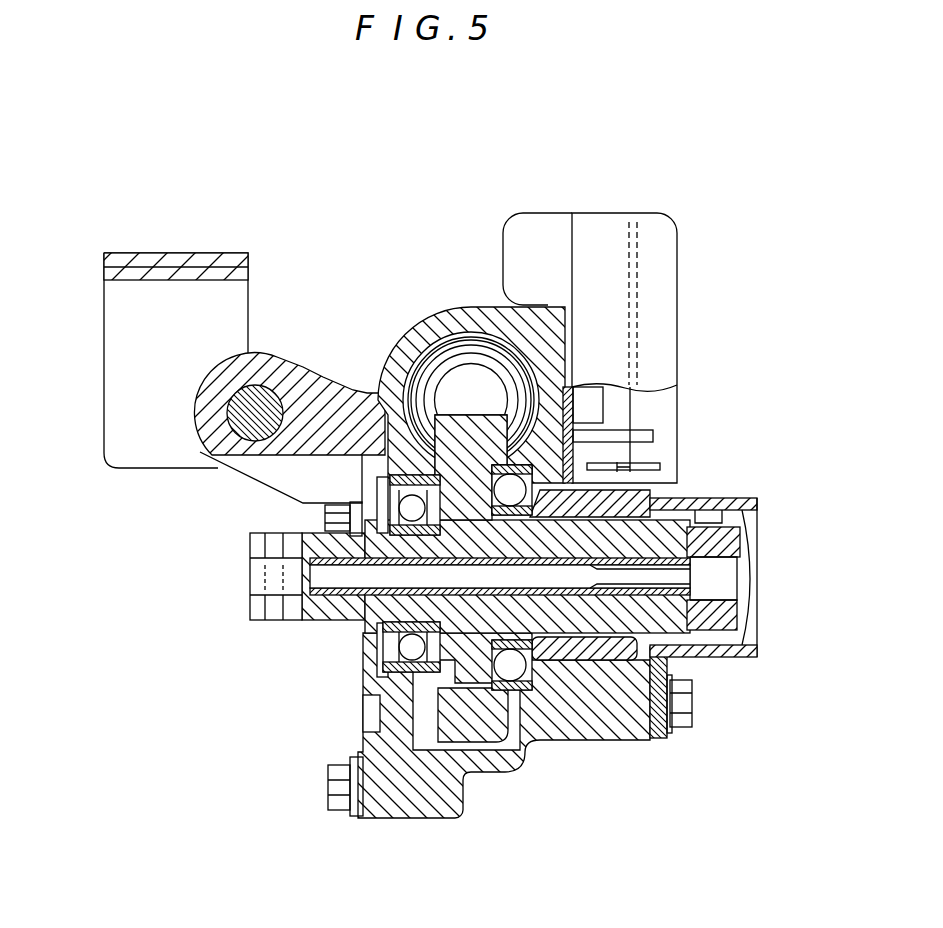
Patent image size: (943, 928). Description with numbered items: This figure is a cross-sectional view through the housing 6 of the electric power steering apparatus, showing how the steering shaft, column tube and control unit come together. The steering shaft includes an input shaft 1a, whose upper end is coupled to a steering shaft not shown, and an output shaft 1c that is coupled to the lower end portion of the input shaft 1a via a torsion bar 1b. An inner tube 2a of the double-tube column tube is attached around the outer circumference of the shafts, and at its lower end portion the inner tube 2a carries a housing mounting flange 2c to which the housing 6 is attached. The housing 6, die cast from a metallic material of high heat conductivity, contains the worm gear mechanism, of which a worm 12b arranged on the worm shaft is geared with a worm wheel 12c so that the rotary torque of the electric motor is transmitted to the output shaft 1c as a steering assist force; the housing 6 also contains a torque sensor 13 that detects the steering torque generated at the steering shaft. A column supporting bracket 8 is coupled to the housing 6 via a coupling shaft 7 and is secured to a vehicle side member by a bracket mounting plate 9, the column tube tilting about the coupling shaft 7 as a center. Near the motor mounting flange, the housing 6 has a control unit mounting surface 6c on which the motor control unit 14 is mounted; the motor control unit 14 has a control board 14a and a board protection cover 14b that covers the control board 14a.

The input shaft 1a is at (737, 540).
The torsion bar 1b is at (352, 580).
The output shaft 1c is at (337, 550).
The inner tube 2a is at (732, 498).
The housing mounting flange 2c is at (660, 667).
The housing 6 is at (585, 728).
The control unit mounting surface 6c is at (567, 355).
The coupling shaft 7 is at (253, 422).
The column supporting bracket 8 is at (128, 353).
The bracket mounting plate 9 is at (198, 253).
The worm 12b is at (432, 357).
The worm wheel 12c is at (527, 773).
The torque sensor 13 is at (650, 482).
The motor control unit 14 is at (680, 312).
The control board 14a is at (633, 406).
The board protection cover 14b is at (680, 431).